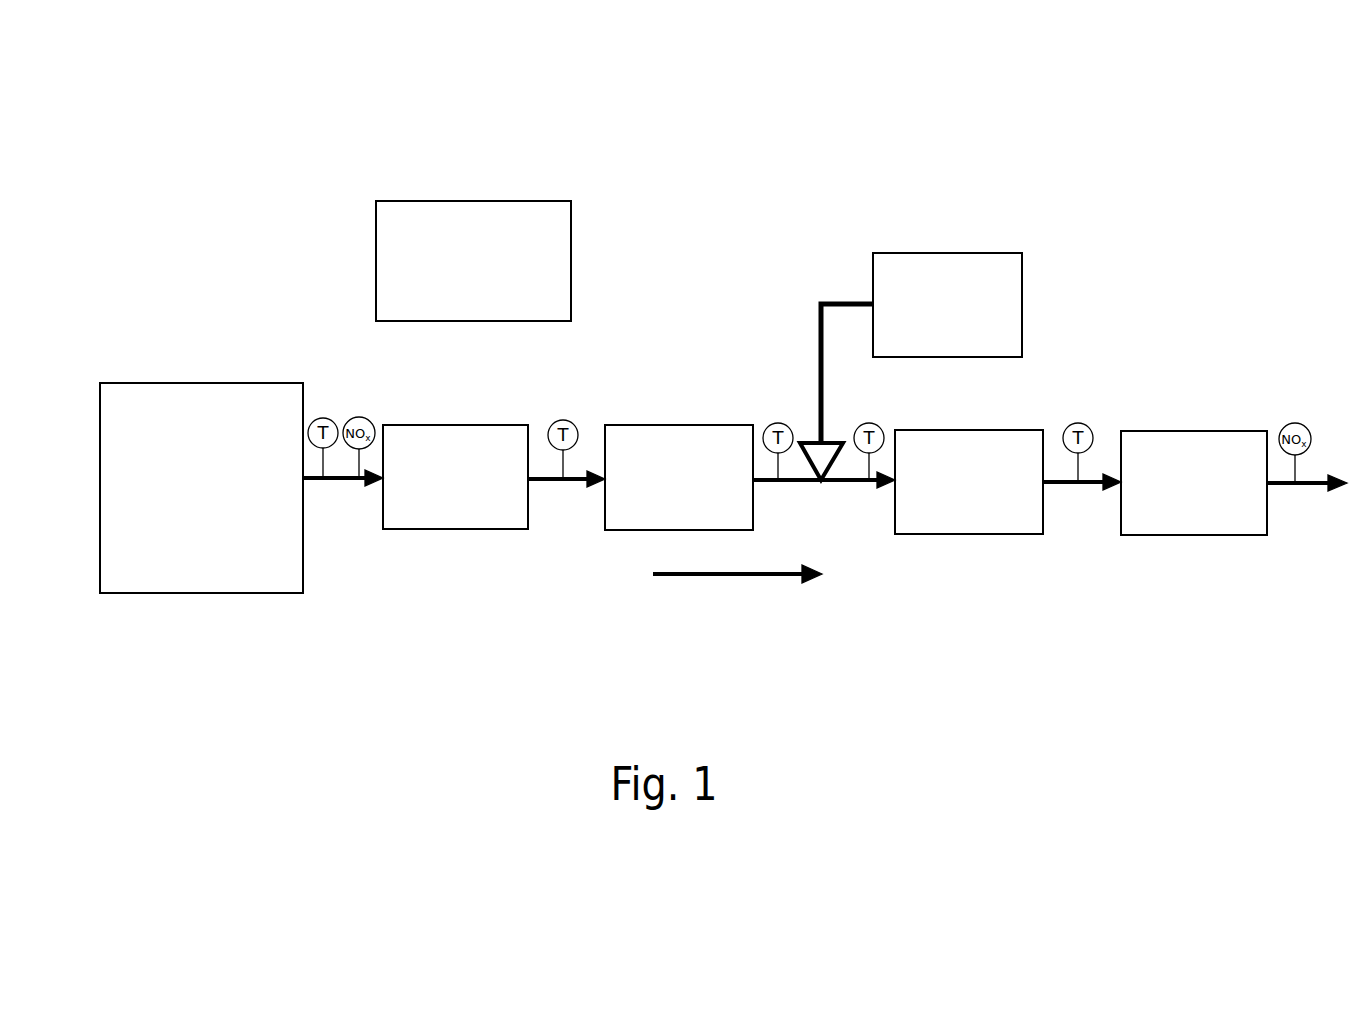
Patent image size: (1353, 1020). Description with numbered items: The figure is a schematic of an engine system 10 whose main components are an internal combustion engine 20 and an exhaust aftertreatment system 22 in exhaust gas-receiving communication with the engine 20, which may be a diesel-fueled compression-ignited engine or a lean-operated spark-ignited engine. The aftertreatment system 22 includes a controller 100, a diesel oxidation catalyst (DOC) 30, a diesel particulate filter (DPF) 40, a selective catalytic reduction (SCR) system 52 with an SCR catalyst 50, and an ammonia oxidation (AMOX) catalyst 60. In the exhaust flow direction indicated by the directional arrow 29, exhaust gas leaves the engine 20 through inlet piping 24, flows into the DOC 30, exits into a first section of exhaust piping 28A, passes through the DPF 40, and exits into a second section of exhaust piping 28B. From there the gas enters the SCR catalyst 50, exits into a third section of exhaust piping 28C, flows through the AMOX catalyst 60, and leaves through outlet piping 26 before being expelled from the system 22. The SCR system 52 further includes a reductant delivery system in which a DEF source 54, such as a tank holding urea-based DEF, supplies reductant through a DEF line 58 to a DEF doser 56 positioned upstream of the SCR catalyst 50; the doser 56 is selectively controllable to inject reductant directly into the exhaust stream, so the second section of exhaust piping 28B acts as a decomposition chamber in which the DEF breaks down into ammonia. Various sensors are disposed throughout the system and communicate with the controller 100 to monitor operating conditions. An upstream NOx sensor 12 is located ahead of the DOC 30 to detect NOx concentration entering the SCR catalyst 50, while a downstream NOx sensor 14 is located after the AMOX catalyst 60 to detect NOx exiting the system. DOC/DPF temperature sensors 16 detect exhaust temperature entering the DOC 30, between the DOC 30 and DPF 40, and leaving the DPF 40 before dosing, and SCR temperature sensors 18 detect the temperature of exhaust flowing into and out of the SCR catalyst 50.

The engine system 10 is at (866, 112).
The upstream NOx sensor 12 is at (366, 418).
The downstream NOx sensor 14 is at (1303, 424).
The DOC/DPF temperature sensors 16 is at (328, 418).
The SCR temperature sensors 18 is at (874, 424).
The internal combustion engine 20 is at (201, 488).
The exhaust aftertreatment system 22 is at (593, 606).
The inlet piping 24 is at (340, 486).
The outlet piping 26 is at (1305, 489).
The first section of exhaust piping 28A is at (556, 486).
The second section of exhaust piping 28B is at (820, 487).
The third section of exhaust piping 28C is at (1072, 489).
The directional arrow 29 is at (693, 578).
The diesel oxidation catalyst (DOC) 30 is at (455, 477).
The diesel particulate filter (DPF) 40 is at (679, 477).
The SCR catalyst 50 is at (969, 482).
The SCR system 52 is at (911, 237).
The DEF source 54 is at (947, 305).
The DEF doser 56 is at (832, 440).
The DEF line 58 is at (818, 350).
The AMOX catalyst 60 is at (1194, 483).
The controller 100 is at (473, 261).